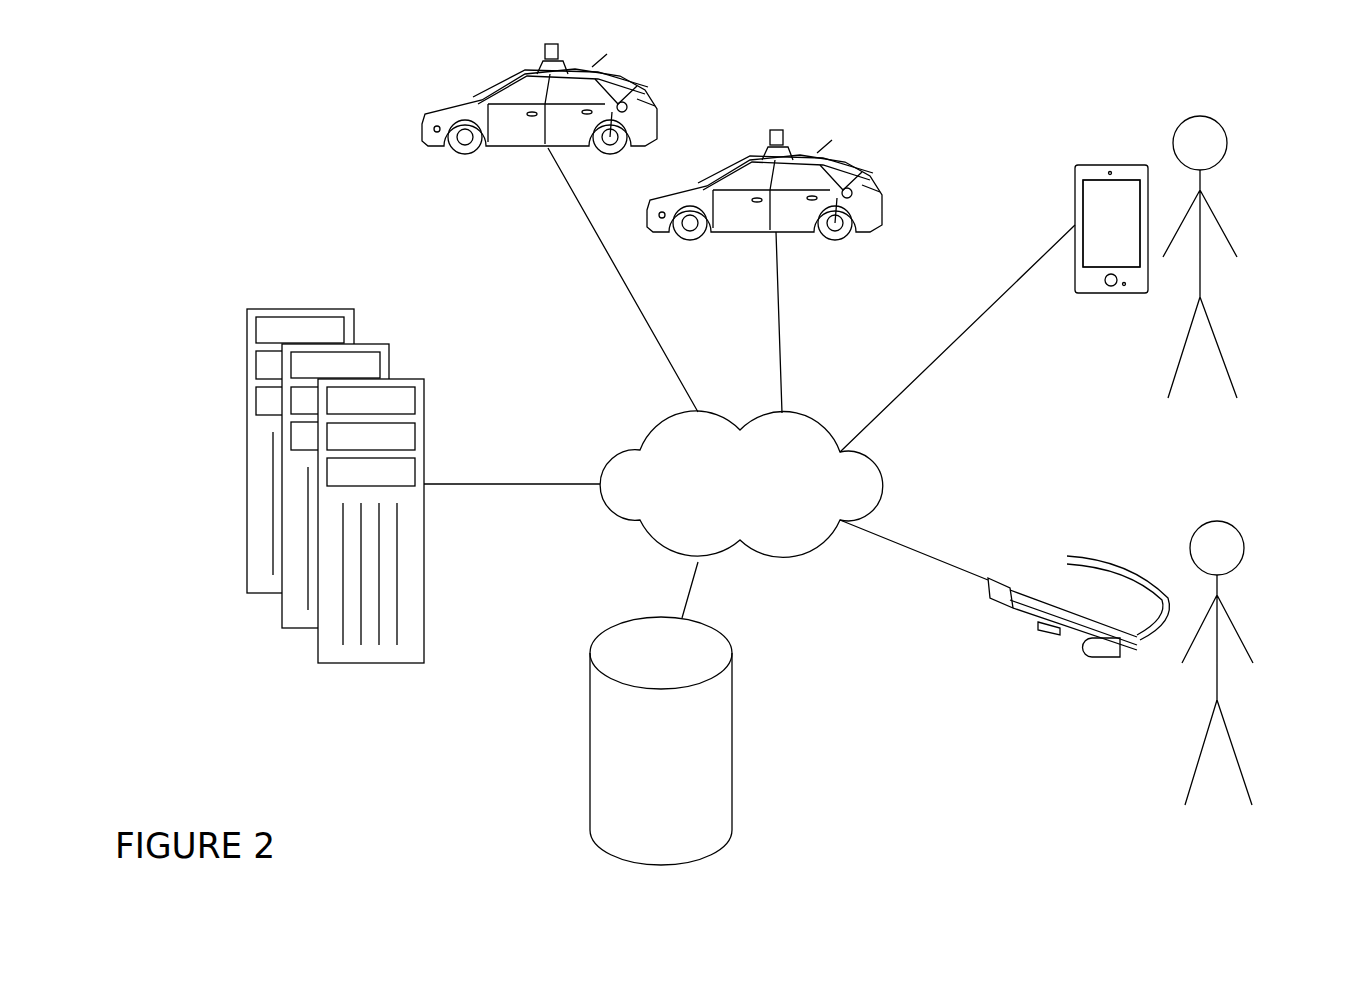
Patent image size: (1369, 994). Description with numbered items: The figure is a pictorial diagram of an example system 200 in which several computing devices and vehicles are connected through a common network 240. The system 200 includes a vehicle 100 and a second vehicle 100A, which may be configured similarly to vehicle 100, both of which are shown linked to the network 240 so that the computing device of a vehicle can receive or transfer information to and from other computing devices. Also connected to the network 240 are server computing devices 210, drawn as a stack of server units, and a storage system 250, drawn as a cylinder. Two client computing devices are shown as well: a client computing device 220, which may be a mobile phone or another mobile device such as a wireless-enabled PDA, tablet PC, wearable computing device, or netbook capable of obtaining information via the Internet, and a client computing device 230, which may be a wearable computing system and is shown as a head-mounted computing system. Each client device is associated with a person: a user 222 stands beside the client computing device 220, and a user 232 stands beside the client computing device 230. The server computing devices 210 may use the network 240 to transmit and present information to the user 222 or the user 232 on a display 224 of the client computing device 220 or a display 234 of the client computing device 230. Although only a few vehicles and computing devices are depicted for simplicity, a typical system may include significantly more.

The system 200 is at (213, 804).
The vehicle 100 is at (427, 142).
The vehicle 100A is at (882, 215).
The server computing devices 210 is at (426, 425).
The client computing device 220 is at (1075, 282).
The user 222 is at (1223, 228).
The display 224 is at (1075, 168).
The client computing device 230 is at (1078, 619).
The user 232 is at (1240, 637).
The display 234 is at (1137, 642).
The network 240 is at (600, 500).
The storage system 250 is at (733, 723).